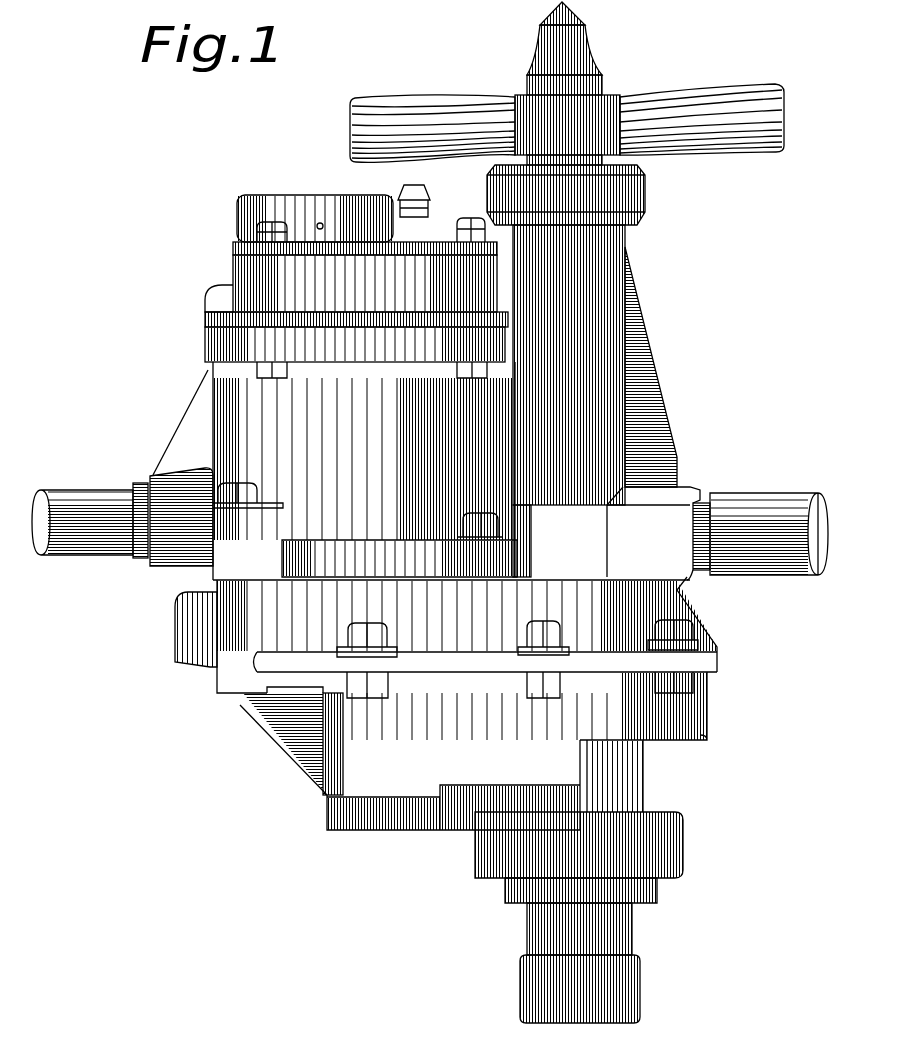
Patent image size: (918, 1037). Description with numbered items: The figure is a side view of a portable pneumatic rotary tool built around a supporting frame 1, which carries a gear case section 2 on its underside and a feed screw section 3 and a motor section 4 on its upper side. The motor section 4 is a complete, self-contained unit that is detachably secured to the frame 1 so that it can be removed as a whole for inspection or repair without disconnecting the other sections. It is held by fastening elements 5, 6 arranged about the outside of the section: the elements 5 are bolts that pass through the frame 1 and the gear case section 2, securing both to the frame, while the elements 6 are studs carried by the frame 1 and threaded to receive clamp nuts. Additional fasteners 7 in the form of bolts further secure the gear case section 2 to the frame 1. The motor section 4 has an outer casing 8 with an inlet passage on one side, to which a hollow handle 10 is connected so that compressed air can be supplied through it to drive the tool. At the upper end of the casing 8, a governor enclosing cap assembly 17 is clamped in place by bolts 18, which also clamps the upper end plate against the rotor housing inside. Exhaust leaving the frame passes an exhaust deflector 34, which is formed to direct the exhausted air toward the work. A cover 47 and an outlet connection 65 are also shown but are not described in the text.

The supporting frame 1 is at (726, 645).
The gear case section 2 is at (714, 713).
The feed screw section 3 is at (665, 362).
The motor section 4 is at (196, 390).
The fastening elements 5 is at (242, 481).
The fastening elements 6 is at (463, 523).
The additional fasteners 7 is at (368, 606).
The outer casing 8 is at (217, 408).
The hollow handle 10 is at (101, 556).
The governor enclosing cap assembly 17 is at (204, 291).
The bolts 18 is at (262, 222).
The exhaust deflector 34 is at (175, 645).
The cover 47 is at (272, 196).
The outlet connection 65 is at (535, 920).